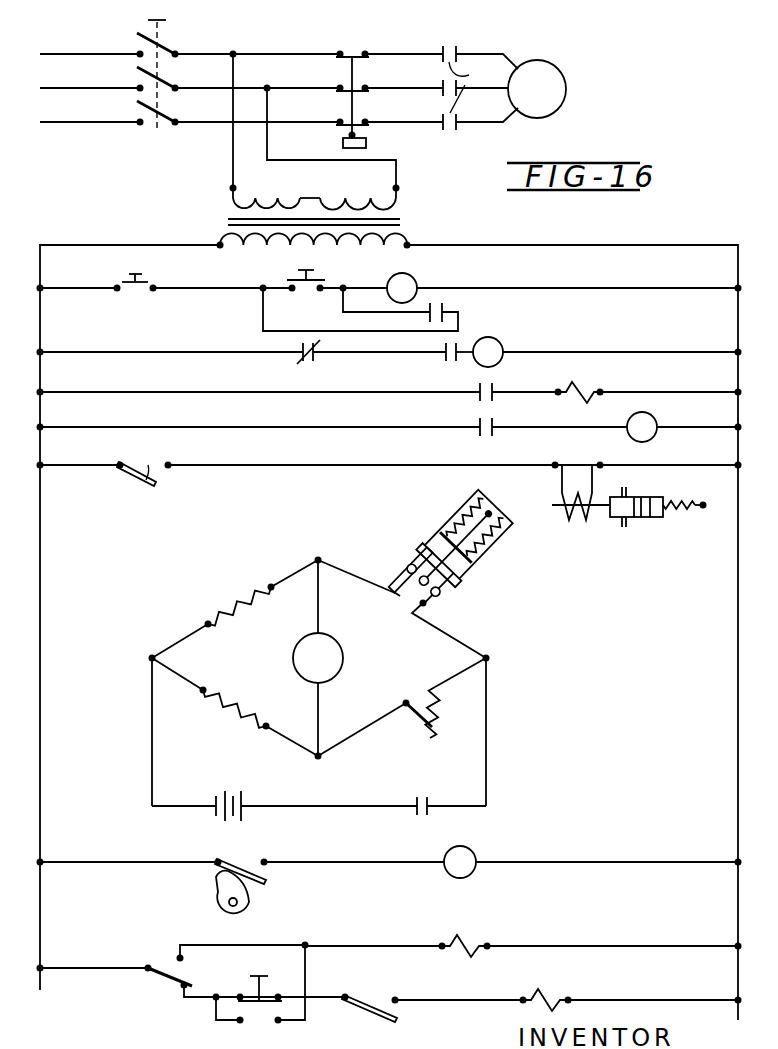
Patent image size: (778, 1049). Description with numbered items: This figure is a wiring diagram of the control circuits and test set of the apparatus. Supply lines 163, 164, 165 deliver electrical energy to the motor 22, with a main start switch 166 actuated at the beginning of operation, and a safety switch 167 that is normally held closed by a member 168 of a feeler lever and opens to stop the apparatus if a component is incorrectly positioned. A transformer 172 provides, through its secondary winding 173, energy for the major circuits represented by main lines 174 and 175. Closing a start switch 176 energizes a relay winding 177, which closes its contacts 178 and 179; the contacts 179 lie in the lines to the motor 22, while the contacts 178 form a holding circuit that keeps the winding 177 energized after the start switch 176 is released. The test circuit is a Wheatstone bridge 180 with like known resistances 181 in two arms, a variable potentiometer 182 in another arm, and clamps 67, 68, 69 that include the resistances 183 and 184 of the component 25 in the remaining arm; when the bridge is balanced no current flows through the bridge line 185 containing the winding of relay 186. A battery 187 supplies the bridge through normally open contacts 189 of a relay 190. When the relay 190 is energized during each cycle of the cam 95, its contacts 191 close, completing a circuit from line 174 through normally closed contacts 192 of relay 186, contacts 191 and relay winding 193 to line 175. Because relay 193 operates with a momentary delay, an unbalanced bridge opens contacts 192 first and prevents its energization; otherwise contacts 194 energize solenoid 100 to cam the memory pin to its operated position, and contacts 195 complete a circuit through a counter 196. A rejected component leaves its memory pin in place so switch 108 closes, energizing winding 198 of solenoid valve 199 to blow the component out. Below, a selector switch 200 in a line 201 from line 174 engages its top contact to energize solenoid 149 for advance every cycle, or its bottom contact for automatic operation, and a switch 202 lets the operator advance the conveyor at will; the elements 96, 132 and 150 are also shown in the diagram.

The supply line 163 is at (52, 47).
The supply line 164 is at (52, 82).
The supply line 165 is at (55, 115).
The main start switch 166 is at (165, 40).
The safety switch 167 is at (340, 136).
The member of lever 168 is at (366, 144).
The relay contacts 179 is at (474, 88).
The motor 22 is at (557, 82).
The transformer 172 is at (403, 223).
The secondary winding 173 is at (218, 243).
The main line 174 is at (40, 277).
The main line 175 is at (736, 264).
The start switch 176 is at (322, 274).
The relay winding 177 is at (413, 278).
The relay contacts 178 is at (438, 303).
The normally closed contacts 192 is at (312, 362).
The normally open contacts 191 is at (450, 362).
The relay winding 193 is at (503, 344).
The contacts 194 is at (480, 400).
The solenoid 100 is at (580, 388).
The contacts 195 is at (480, 436).
The counter 196 is at (656, 420).
The switch 108 is at (150, 465).
The winding of solenoid valve 198 is at (586, 520).
The solenoid valve 199 is at (640, 497).
The component 25 is at (458, 552).
The resistance of component 183 is at (465, 517).
The resistance of component 184 is at (485, 537).
The clamp 68 is at (410, 570).
The clamp 69 is at (438, 588).
The clamp 67 is at (392, 597).
The Wheatstone bridge 180 is at (311, 698).
The known resistances 181 is at (258, 586).
The relay 186 is at (340, 645).
The bridge line 185 is at (320, 705).
The variable potentiometer 182 is at (402, 718).
The battery 187 is at (230, 790).
The normally open contacts 189 is at (425, 815).
The cam operated switch 96 is at (242, 866).
The cam 95 is at (250, 902).
The relay 190 is at (474, 855).
The line 201 is at (85, 968).
The selector switch 200 is at (162, 975).
The switch 202 is at (254, 986).
The switch 132 is at (372, 1020).
The solenoid 149 is at (466, 940).
The heater element 150 is at (548, 993).